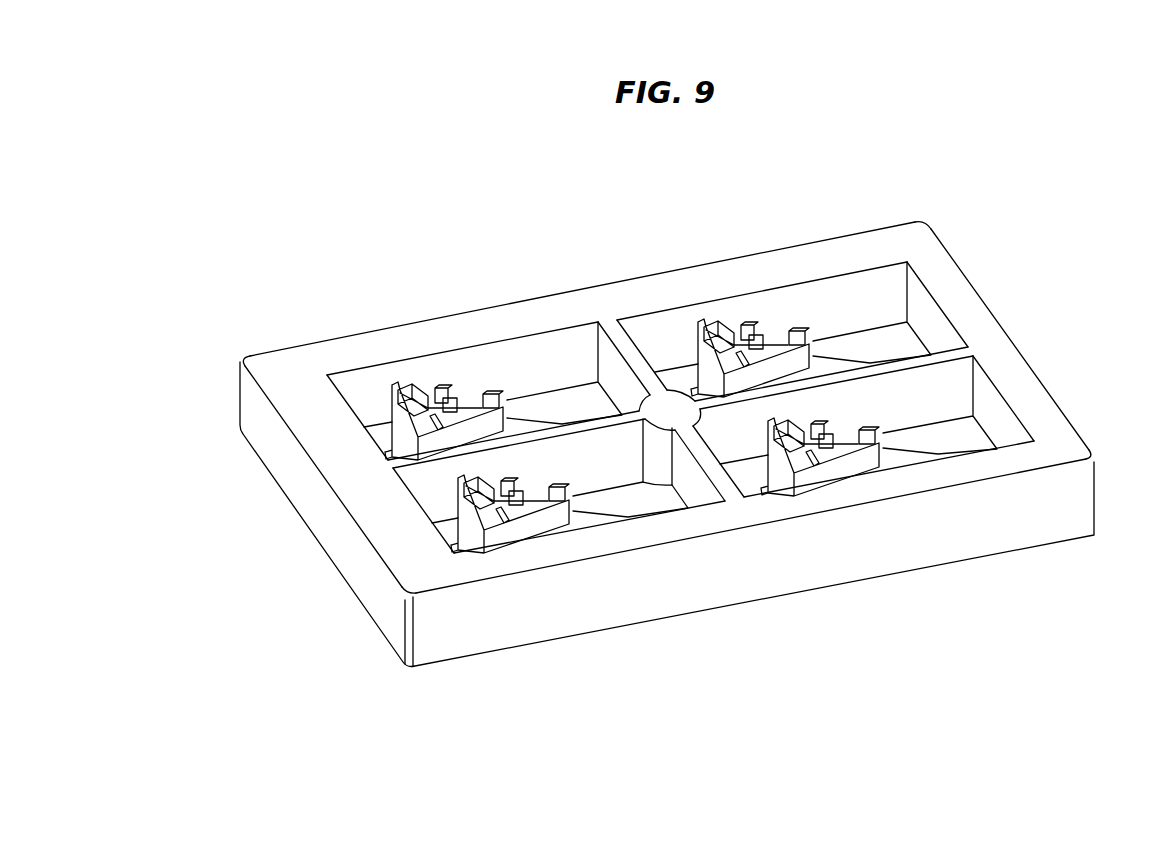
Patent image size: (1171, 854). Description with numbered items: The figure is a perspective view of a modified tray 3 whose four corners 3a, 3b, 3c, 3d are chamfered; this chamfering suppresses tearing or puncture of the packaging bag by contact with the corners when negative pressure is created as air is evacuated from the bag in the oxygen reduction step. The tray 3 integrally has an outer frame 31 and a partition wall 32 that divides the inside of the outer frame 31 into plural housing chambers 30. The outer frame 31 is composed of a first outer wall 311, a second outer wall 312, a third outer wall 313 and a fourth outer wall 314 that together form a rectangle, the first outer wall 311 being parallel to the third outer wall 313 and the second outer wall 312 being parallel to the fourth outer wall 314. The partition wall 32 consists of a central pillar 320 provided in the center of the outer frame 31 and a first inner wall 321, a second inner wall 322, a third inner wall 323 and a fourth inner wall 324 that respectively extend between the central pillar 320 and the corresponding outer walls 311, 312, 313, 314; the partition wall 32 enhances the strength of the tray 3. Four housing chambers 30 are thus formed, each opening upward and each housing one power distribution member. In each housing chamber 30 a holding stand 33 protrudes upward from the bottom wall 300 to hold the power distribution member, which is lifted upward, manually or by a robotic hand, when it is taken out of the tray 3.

The tray 3 is at (668, 413).
The chamfered corner 3a is at (227, 345).
The chamfered corner 3b is at (936, 214).
The chamfered corner 3c is at (1110, 462).
The chamfered corner 3d is at (388, 607).
The housing chamber 30 is at (439, 364).
The bottom wall 300 is at (567, 405).
The outer frame 31 is at (664, 396).
The first outer wall 311 is at (498, 313).
The second outer wall 312 is at (930, 253).
The third outer wall 313 is at (1008, 460).
The fourth outer wall 314 is at (317, 390).
The partition wall 32 is at (714, 340).
The central pillar 320 is at (655, 408).
The first inner wall 321 is at (620, 320).
The second inner wall 322 is at (823, 383).
The third inner wall 323 is at (710, 465).
The fourth inner wall 324 is at (522, 442).
The holding stand 33 is at (463, 420).